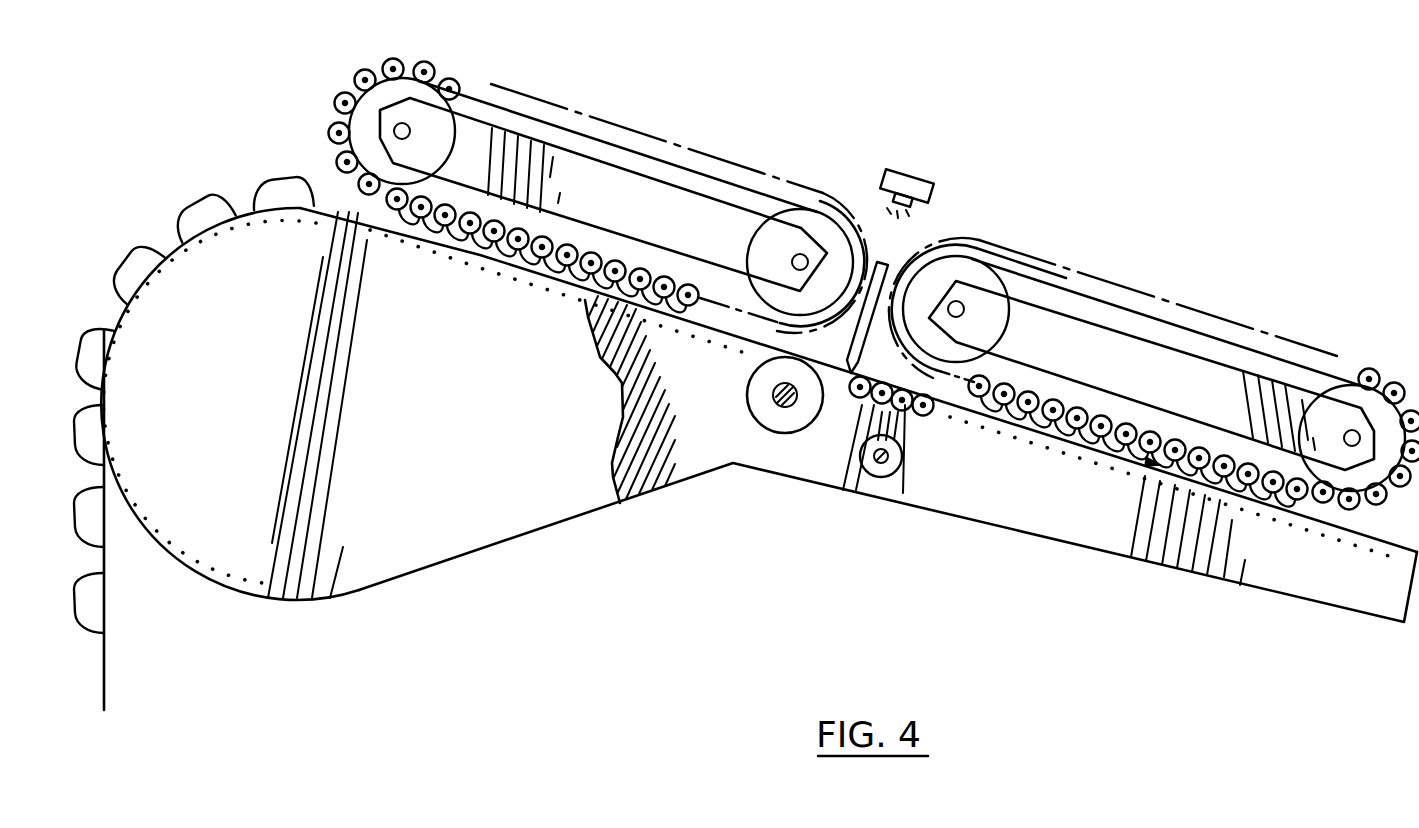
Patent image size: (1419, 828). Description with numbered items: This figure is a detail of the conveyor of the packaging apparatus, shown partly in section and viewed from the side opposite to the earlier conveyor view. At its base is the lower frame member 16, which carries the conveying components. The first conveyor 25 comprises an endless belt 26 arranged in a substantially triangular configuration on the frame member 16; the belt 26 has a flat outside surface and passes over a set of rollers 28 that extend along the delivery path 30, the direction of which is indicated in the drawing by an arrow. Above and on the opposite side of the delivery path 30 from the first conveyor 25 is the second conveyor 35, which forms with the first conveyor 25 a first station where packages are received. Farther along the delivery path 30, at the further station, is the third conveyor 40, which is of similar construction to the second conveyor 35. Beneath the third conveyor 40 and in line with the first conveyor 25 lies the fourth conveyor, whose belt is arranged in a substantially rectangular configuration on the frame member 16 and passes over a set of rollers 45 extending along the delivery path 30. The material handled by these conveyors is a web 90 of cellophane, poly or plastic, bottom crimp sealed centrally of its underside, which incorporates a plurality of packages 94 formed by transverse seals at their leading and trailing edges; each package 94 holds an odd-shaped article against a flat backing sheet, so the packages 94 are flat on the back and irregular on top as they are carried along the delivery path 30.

The lower frame member 16 is at (538, 503).
The first conveyor 25 is at (787, 433).
The endless belt 26 is at (692, 466).
The set of rollers 28 is at (677, 333).
The delivery path 30 is at (1128, 455).
The second conveyor 35 is at (724, 136).
The third conveyor 40 is at (1158, 273).
The set of rollers 45 is at (930, 408).
The web of packages 90 is at (106, 683).
The packages 94 is at (96, 611).